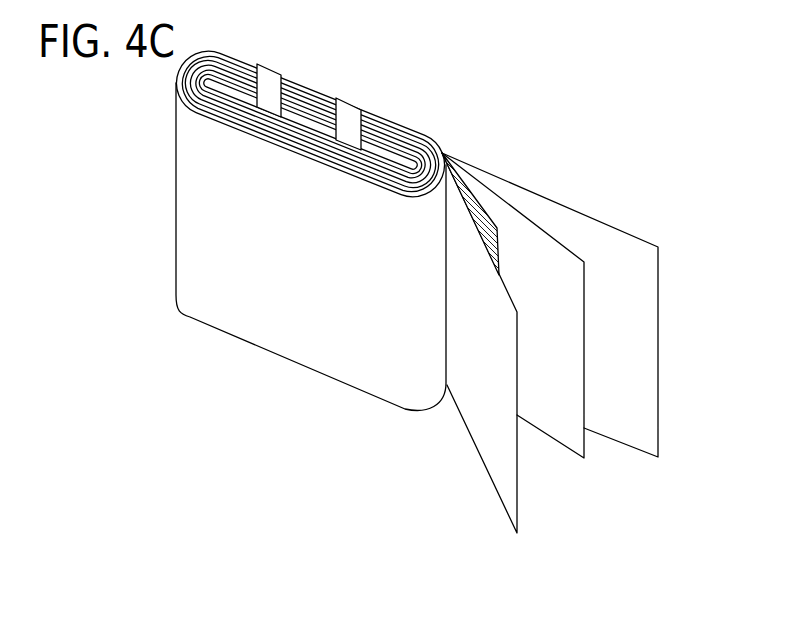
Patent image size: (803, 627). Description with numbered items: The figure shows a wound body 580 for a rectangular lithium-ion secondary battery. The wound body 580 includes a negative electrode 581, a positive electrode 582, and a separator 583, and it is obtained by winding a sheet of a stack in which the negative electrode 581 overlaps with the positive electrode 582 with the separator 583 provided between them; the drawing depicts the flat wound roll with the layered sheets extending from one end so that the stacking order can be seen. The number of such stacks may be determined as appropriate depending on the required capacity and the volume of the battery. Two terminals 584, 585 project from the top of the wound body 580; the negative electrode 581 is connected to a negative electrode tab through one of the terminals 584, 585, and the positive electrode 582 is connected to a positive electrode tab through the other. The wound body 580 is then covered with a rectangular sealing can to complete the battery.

The wound body 580 is at (140, 131).
The negative electrode 581 is at (493, 213).
The positive electrode 582 is at (625, 255).
The separator 583 is at (508, 473).
The terminal 584 is at (266, 71).
The terminal 585 is at (345, 108).